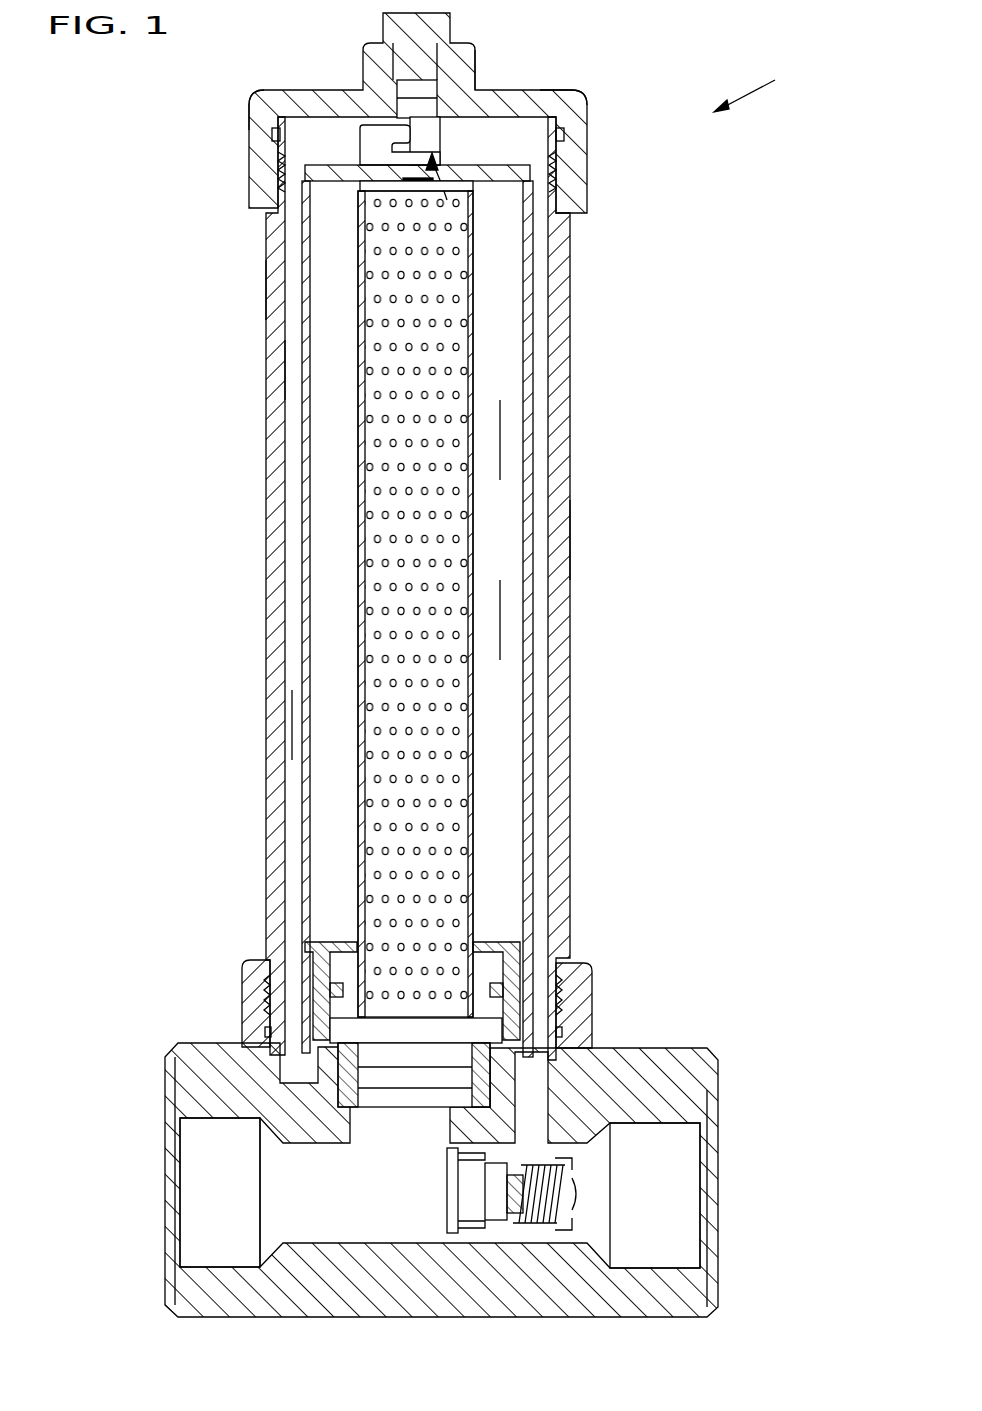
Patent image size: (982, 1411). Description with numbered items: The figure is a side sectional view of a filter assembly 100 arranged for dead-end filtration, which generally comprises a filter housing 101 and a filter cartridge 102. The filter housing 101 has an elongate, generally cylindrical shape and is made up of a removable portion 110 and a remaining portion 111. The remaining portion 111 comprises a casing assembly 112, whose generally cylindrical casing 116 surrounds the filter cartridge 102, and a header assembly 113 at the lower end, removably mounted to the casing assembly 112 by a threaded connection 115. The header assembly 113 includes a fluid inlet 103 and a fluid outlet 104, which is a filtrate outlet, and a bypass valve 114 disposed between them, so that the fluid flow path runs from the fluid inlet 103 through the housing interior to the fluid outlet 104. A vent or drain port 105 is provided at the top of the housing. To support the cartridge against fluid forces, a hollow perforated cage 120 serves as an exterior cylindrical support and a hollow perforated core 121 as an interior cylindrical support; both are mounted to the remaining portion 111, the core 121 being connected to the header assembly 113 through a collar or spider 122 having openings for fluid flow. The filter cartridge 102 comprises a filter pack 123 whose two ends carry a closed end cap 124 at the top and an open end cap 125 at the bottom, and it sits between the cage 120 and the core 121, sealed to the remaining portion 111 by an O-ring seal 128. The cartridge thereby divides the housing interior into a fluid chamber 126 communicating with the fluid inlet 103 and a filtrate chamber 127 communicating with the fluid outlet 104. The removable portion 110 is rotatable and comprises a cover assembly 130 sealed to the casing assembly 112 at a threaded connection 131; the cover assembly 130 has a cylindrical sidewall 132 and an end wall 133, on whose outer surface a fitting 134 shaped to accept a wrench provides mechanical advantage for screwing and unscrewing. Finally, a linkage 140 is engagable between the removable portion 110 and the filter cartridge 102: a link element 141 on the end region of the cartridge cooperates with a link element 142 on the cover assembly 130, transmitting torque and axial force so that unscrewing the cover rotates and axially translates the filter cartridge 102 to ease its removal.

The filter assembly 100 is at (771, 89).
The filter housing 101 is at (566, 328).
The filter cartridge 102 is at (500, 442).
The fluid inlet 103 is at (250, 1207).
The fluid outlet 104 is at (680, 1207).
The vent or drain port 105 is at (412, 83).
The removable portion 110 is at (270, 90).
The remaining portion 111 is at (276, 290).
The casing assembly 112 is at (278, 368).
The header assembly 113 is at (176, 1072).
The bypass valve 114 is at (545, 1160).
The threaded connection 115 is at (562, 1012).
The casing 116 is at (566, 540).
The cage 120 is at (306, 497).
The core 121 is at (416, 599).
The spider 122 is at (330, 992).
The filter pack 123 is at (500, 622).
The end cap 124 is at (518, 170).
The end cap 125 is at (524, 935).
The fluid chamber 126 is at (292, 718).
The filtrate chamber 127 is at (440, 747).
The O-ring seal 128 is at (363, 990).
The cover assembly 130 is at (254, 108).
The threaded connection 131 is at (558, 187).
The cylindrical sidewall 132 is at (258, 155).
The end wall 133 is at (565, 100).
The fitting 134 is at (520, 45).
The linkage 140 is at (447, 200).
The link element 141 is at (371, 134).
The link element 142 is at (434, 138).